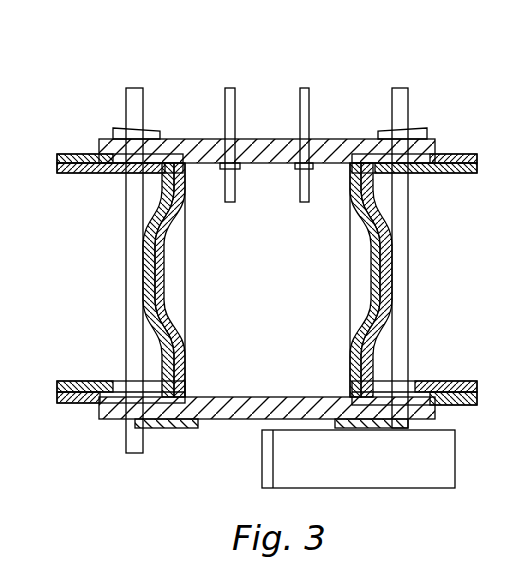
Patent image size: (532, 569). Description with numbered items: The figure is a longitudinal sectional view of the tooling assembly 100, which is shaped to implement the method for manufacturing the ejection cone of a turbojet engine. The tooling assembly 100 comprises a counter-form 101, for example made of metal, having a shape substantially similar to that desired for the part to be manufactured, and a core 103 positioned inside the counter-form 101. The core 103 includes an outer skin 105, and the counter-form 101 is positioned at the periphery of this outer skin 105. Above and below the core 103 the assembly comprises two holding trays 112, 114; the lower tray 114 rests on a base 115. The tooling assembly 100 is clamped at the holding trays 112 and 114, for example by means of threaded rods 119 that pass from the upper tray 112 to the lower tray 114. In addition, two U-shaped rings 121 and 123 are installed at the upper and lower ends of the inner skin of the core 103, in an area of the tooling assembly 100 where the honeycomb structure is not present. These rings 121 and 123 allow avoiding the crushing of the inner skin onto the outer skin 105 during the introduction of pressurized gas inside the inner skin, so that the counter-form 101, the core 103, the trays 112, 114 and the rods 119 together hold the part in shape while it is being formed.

The tooling assembly 100 is at (191, 72).
The counter-form 101 is at (390, 196).
The core 103 is at (350, 303).
The outer skin 105 is at (390, 258).
The holding tray 112 is at (252, 148).
The holding tray 114 is at (238, 408).
The base 115 is at (432, 468).
The threaded rods 119 is at (132, 258).
The U-shaped ring 121 is at (165, 380).
The U-shaped ring 123 is at (163, 172).